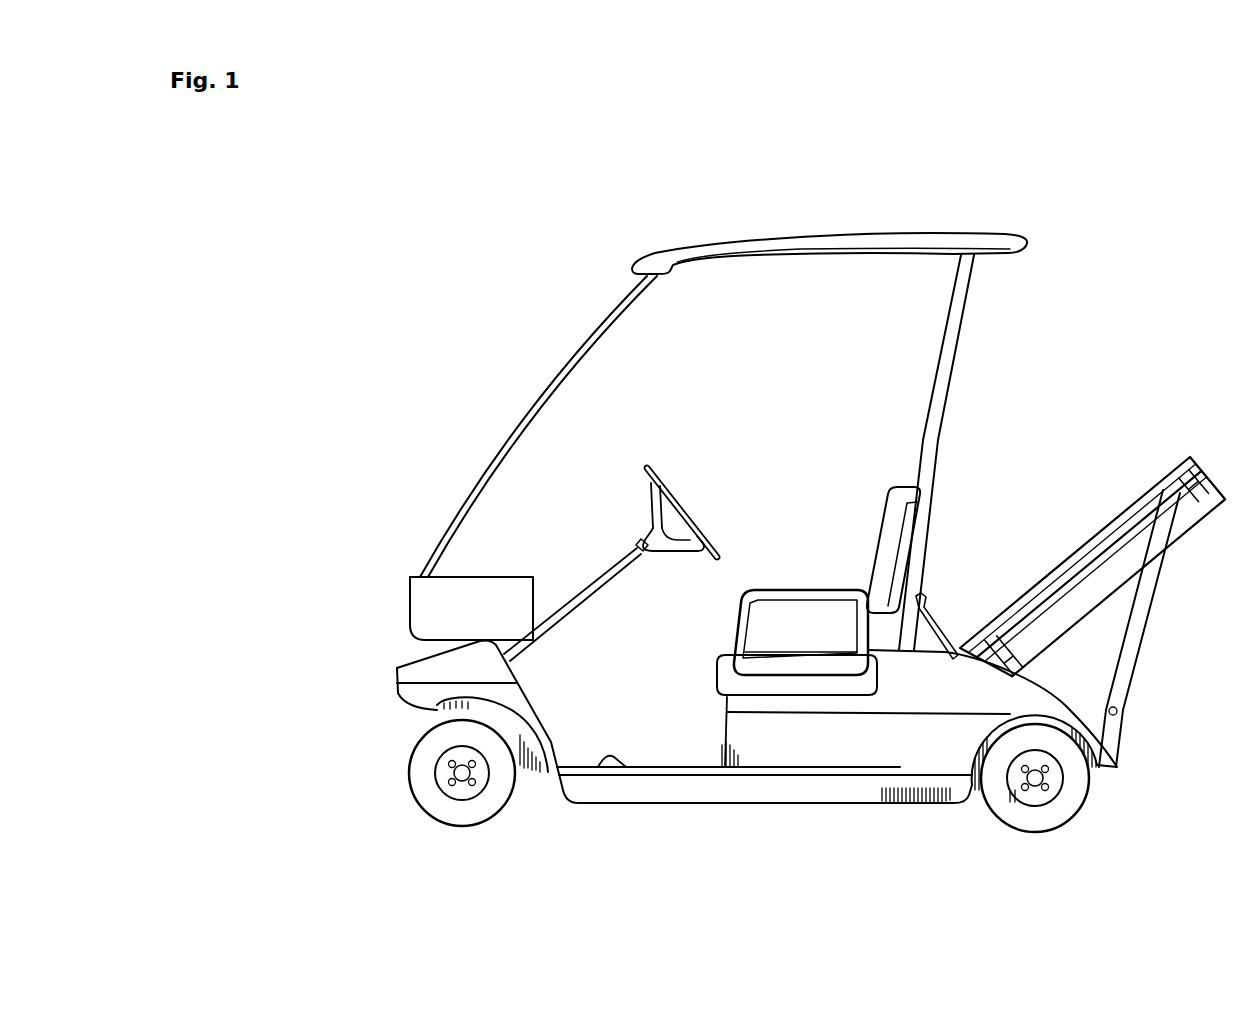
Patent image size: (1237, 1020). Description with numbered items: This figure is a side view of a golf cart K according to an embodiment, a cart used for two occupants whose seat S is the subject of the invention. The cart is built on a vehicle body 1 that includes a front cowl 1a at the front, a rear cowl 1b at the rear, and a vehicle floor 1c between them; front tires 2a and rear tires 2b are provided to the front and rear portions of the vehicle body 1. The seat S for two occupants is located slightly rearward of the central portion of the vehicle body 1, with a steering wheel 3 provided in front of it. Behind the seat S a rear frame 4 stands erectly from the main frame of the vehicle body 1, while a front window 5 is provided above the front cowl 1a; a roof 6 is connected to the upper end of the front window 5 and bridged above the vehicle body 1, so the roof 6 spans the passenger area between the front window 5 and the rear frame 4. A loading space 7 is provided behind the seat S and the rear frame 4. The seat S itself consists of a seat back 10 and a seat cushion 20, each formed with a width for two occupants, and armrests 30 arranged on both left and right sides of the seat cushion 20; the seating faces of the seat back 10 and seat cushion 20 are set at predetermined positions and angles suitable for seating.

The golf cart K is at (398, 246).
The seat S is at (829, 548).
The vehicle body 1 is at (806, 805).
The front cowl 1a is at (422, 657).
The rear cowl 1b is at (1060, 697).
The vehicle floor 1c is at (604, 772).
The front tires 2a is at (408, 762).
The rear tires 2b is at (1093, 797).
The steering wheel 3 is at (675, 488).
The rear frame 4 is at (962, 320).
The front window 5 is at (567, 365).
The roof 6 is at (822, 240).
The loading space 7 is at (1175, 470).
The seat back 10 is at (906, 484).
The seat cushion 20 is at (720, 680).
The armrests 30 is at (780, 676).